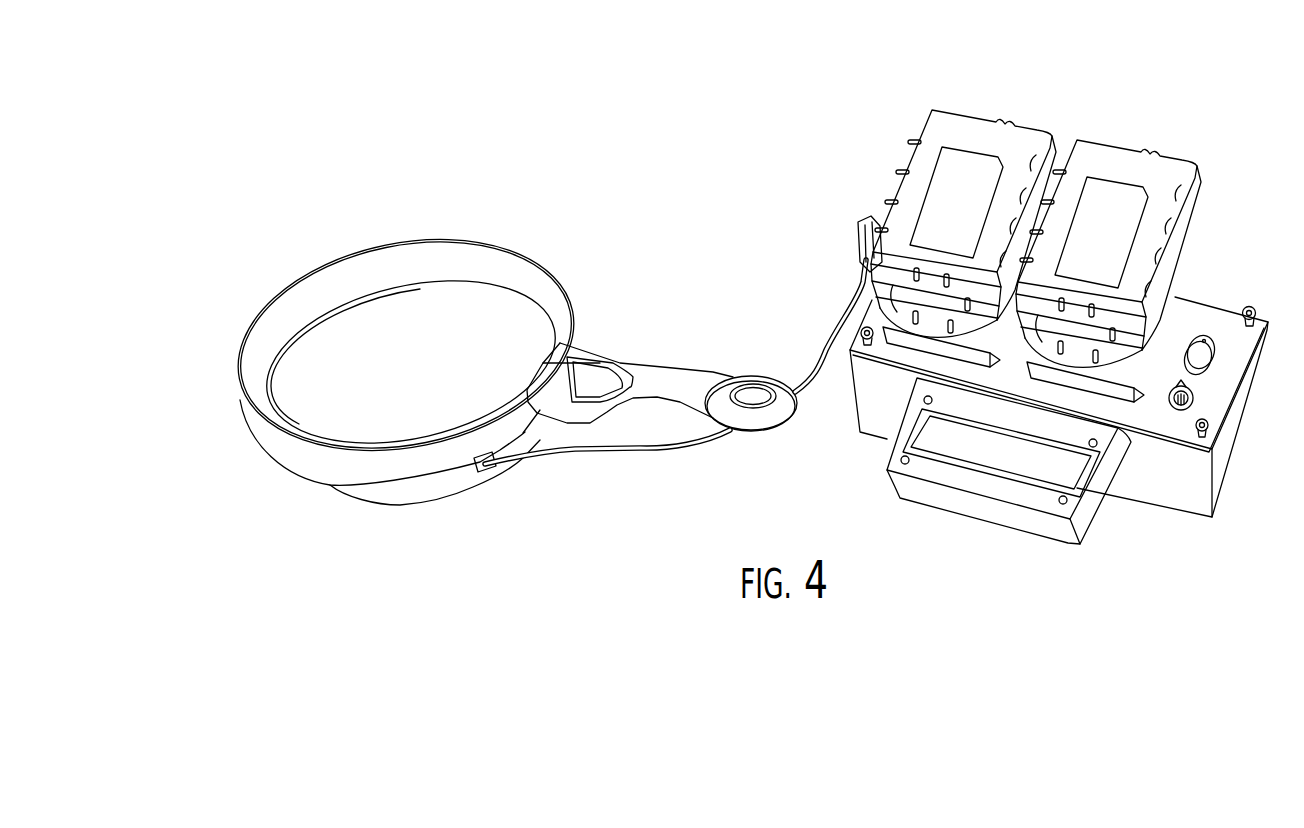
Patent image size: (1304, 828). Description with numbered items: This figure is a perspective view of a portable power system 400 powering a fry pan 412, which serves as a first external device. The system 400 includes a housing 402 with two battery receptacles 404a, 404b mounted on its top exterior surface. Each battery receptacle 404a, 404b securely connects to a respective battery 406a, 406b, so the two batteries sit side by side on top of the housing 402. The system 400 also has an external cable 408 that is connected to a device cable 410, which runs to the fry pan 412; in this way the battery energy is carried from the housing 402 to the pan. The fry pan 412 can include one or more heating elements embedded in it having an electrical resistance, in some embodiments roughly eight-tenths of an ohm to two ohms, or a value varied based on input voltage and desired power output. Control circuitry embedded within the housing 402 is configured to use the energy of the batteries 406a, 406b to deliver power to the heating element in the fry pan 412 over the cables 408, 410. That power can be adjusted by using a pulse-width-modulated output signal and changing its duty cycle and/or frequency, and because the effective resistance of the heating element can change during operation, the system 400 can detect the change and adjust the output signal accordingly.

The portable power system 400 is at (743, 310).
The housing 402 is at (1133, 518).
The battery receptacle 404a is at (955, 355).
The battery receptacle 404b is at (1062, 385).
The battery 406a is at (978, 135).
The battery 406b is at (1121, 166).
The external cable 408 is at (877, 199).
The device cable 410 is at (825, 343).
The fry pan 412 is at (491, 336).